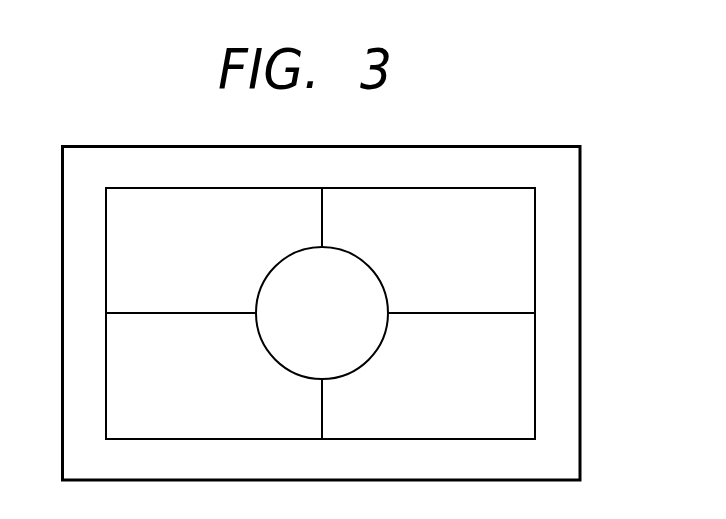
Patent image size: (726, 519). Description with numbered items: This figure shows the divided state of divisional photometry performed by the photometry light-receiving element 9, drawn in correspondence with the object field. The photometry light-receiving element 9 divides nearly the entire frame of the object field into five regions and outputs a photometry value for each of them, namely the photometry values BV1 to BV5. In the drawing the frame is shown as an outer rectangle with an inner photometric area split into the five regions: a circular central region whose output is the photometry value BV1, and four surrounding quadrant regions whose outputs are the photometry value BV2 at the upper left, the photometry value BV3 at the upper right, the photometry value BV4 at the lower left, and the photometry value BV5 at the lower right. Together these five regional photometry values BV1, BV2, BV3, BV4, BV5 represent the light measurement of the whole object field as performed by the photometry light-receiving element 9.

The photometry light-receiving element 9 is at (525, 147).
The photometry value BV1 is at (322, 313).
The photometry value BV2 is at (214, 250).
The photometry value BV3 is at (428, 250).
The photometry value BV4 is at (214, 376).
The photometry value BV5 is at (428, 376).